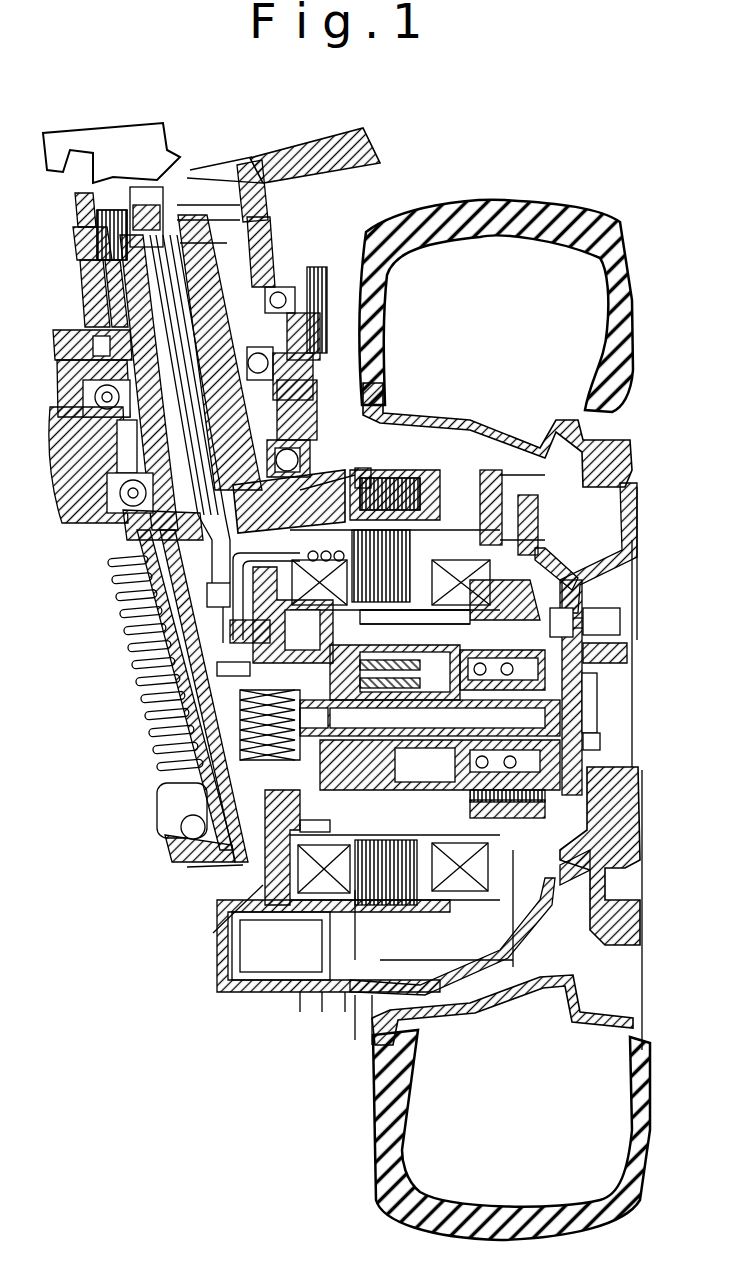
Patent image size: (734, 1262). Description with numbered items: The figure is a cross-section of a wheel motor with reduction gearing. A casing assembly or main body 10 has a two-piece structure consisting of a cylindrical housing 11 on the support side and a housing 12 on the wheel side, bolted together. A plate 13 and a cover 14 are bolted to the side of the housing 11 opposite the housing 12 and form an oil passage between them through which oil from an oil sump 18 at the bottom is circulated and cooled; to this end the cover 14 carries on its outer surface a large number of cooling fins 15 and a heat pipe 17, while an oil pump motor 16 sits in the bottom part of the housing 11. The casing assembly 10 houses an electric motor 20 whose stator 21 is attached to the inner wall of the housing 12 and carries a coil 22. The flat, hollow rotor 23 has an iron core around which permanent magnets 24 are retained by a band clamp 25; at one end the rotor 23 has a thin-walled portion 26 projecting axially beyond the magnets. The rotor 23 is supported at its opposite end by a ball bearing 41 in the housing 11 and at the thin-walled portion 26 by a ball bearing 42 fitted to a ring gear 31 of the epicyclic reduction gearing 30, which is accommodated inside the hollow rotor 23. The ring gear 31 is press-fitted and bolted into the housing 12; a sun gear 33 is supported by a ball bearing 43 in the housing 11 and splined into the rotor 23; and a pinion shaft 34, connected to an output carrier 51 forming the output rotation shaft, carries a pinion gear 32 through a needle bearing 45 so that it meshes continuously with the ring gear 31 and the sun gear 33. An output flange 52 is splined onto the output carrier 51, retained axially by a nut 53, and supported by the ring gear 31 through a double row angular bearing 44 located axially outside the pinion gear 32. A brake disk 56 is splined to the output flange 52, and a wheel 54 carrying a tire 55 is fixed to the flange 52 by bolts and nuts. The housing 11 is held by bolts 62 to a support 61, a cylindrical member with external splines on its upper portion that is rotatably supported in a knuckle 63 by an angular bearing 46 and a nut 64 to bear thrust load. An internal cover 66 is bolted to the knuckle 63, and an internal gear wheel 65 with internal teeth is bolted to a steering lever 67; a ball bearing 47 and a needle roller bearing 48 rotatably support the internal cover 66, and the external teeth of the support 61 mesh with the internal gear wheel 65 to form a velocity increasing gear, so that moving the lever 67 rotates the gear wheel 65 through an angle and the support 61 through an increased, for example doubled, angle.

The casing assembly 10 is at (366, 1005).
The cylindrical housing 11 is at (235, 867).
The housing 12 is at (498, 500).
The plate 13 is at (118, 616).
The cover 14 is at (110, 581).
The cooling fins 15 is at (110, 562).
The oil pump motor 16 is at (240, 992).
The heat pipe 17 is at (160, 820).
The oil sump 18 is at (452, 922).
The electric motor 20 is at (262, 775).
The stator 21 is at (336, 716).
The coil 22 is at (385, 732).
The rotor 23 is at (340, 628).
The permanent magnets 24 is at (345, 832).
The band clamp 25 is at (505, 599).
The thin-walled portion 26 is at (586, 548).
The epicyclic reduction gearing 30 is at (235, 700).
The ring gear 31 is at (600, 647).
The pinion gear 32 is at (430, 718).
The sun gear 33 is at (440, 765).
The pinion shaft 34 is at (348, 717).
The ball bearing 41 is at (395, 707).
The ball bearing 42 is at (507, 817).
The ball bearing 43 is at (366, 719).
The double row angular bearing 44 is at (516, 671).
The needle bearing 45 is at (415, 623).
The angular bearing 46 is at (95, 405).
The ball bearing 47 is at (90, 340).
The needle roller bearing 48 is at (88, 283).
The output carrier 51 is at (610, 742).
The output flange 52 is at (622, 785).
The nut 53 is at (592, 692).
The wheel 54 is at (622, 467).
The tire 55 is at (612, 250).
The brake disk 56 is at (538, 498).
The support 61 is at (112, 433).
The bolts 62 is at (318, 465).
The knuckle 63 is at (62, 463).
The nut 64 is at (85, 367).
The internal gear wheel 65 is at (80, 297).
The internal cover 66 is at (78, 266).
The steering lever 67 is at (388, 156).